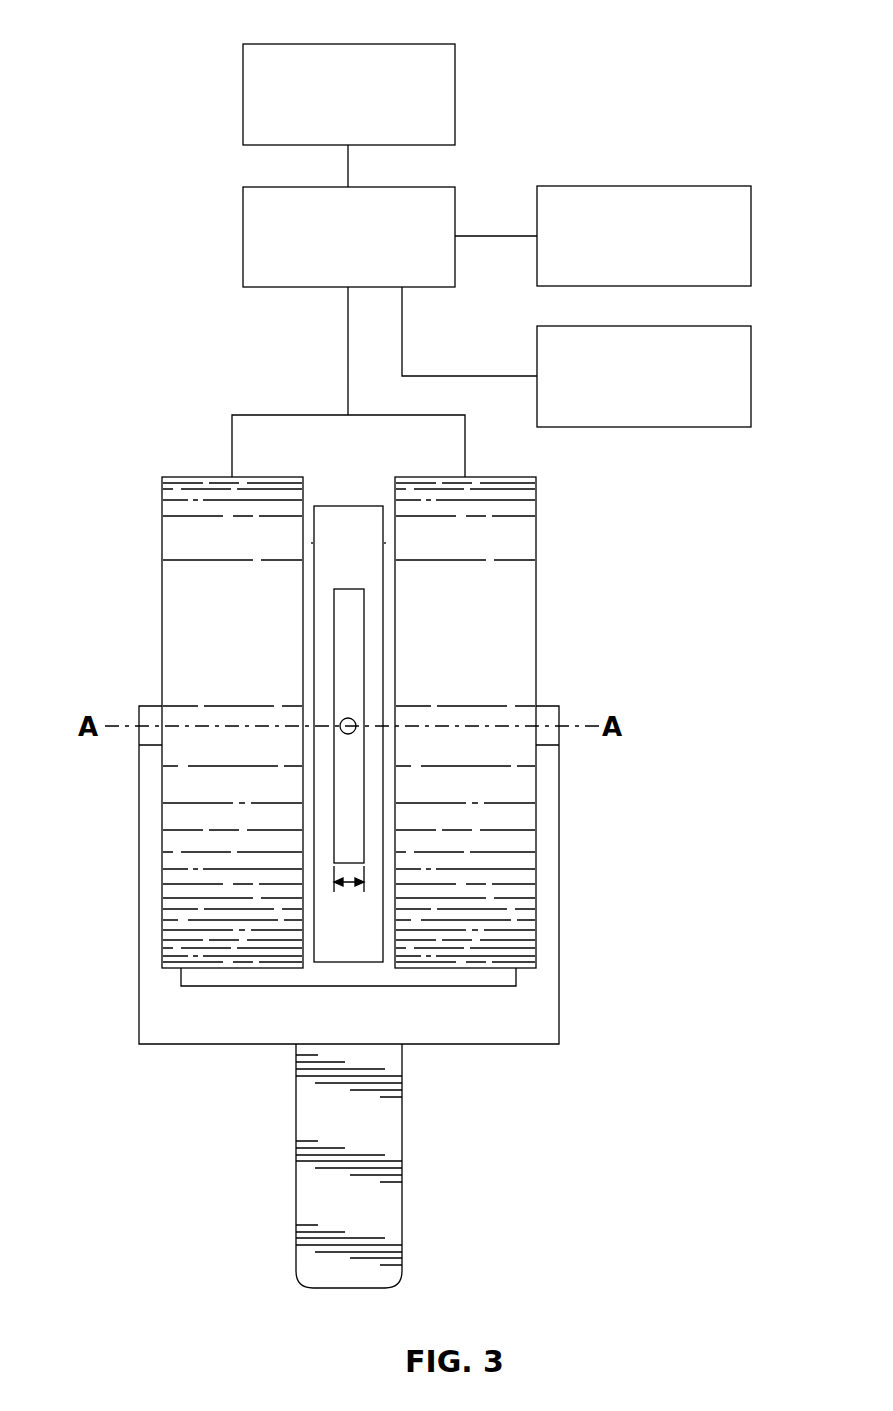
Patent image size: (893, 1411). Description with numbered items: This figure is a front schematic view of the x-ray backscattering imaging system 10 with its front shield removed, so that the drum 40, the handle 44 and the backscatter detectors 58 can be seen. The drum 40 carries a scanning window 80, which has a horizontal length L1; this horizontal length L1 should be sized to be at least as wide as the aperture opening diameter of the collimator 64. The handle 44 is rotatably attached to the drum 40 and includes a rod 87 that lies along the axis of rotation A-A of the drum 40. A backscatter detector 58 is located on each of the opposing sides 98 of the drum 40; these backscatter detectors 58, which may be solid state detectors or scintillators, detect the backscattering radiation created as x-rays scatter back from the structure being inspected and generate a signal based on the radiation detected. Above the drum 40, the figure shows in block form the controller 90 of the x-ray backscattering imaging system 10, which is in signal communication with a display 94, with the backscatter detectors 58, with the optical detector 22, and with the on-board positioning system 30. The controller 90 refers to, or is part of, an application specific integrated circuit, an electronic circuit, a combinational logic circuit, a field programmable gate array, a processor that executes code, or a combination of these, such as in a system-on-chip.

The x-ray backscattering imaging system 10 is at (115, 333).
The optical detector 22 is at (424, 44).
The on-board positioning system 30 is at (715, 326).
The drum 40 is at (346, 530).
The handle 44 is at (350, 1125).
The backscatter detectors 58 is at (232, 620).
The collimator 64 is at (331, 726).
The scanning window 80 is at (348, 592).
The rod 87 is at (548, 736).
The controller 90 is at (277, 187).
The display 94 is at (715, 186).
The opposing sides 98 is at (312, 542).
The horizontal length L1 is at (349, 892).